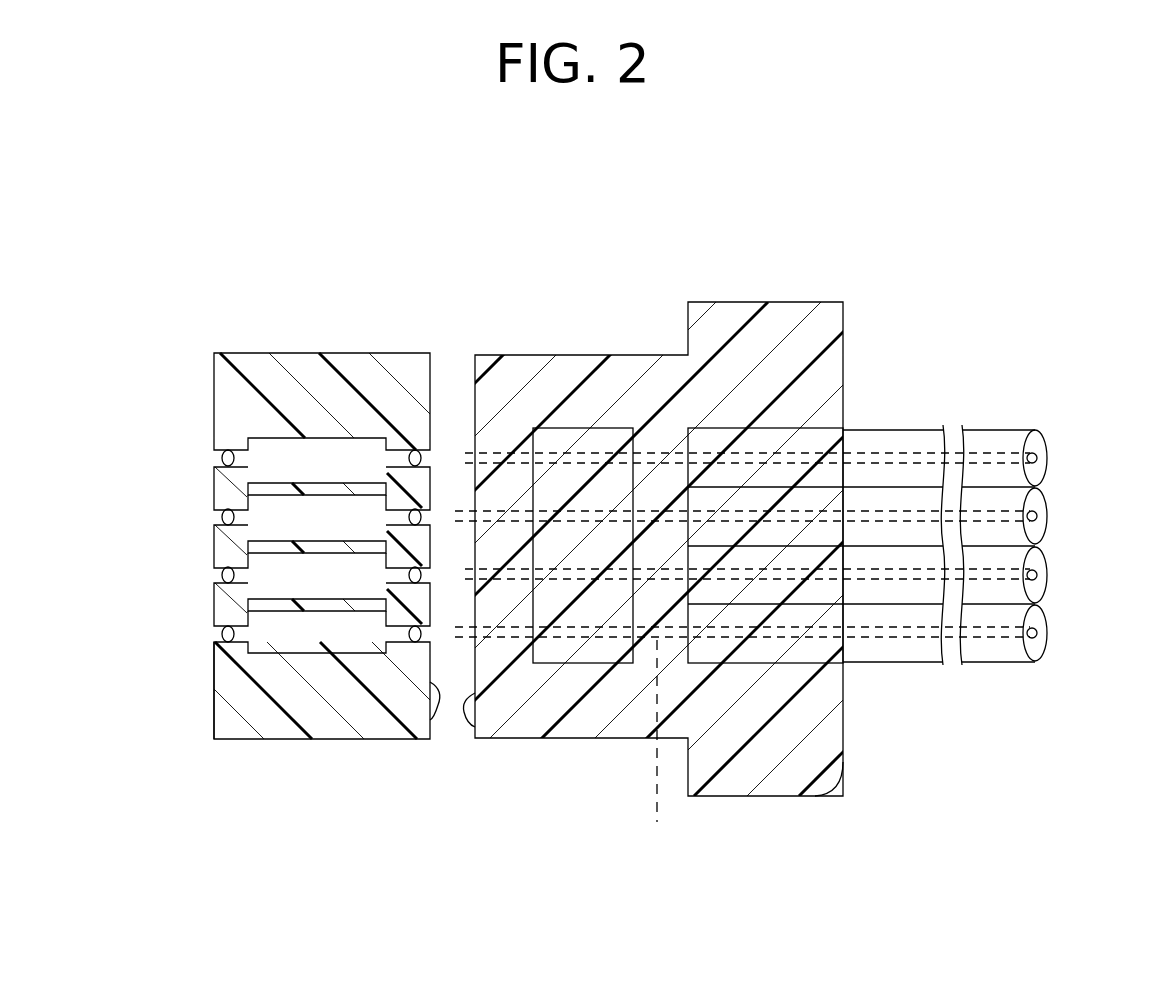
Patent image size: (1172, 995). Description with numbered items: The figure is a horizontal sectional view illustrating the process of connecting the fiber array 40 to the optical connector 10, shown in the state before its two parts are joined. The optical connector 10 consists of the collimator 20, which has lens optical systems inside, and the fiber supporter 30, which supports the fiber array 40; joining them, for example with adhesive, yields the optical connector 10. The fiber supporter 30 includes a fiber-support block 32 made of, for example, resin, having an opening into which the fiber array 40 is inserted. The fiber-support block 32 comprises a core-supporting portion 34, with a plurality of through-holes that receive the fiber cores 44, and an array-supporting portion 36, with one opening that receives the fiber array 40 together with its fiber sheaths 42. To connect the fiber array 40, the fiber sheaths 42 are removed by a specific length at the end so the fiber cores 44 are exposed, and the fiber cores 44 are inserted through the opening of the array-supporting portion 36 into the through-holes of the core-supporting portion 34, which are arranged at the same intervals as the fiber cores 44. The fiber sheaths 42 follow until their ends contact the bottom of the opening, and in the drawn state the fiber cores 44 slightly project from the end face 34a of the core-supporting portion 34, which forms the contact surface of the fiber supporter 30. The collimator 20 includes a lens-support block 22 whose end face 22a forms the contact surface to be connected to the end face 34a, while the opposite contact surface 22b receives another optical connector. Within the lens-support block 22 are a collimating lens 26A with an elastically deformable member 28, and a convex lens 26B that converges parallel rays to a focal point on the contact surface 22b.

The optical connector 10 is at (960, 181).
The collimator 20 is at (430, 298).
The lens-support block 22 is at (268, 708).
The end face 22a is at (406, 740).
The contact surface 22b is at (214, 703).
The collimating lens 26A is at (418, 443).
The convex lens 26B is at (214, 520).
The elastically deformable member 28 is at (403, 442).
The fiber supporter 30 is at (845, 298).
The fiber-support block 32 is at (578, 752).
The core-supporting portion 34 is at (600, 740).
The end face 34a is at (485, 740).
The array-supporting portion 36 is at (843, 776).
The fiber array 40 is at (1055, 428).
The fiber sheaths 42 is at (880, 650).
The fiber cores 44 is at (658, 754).